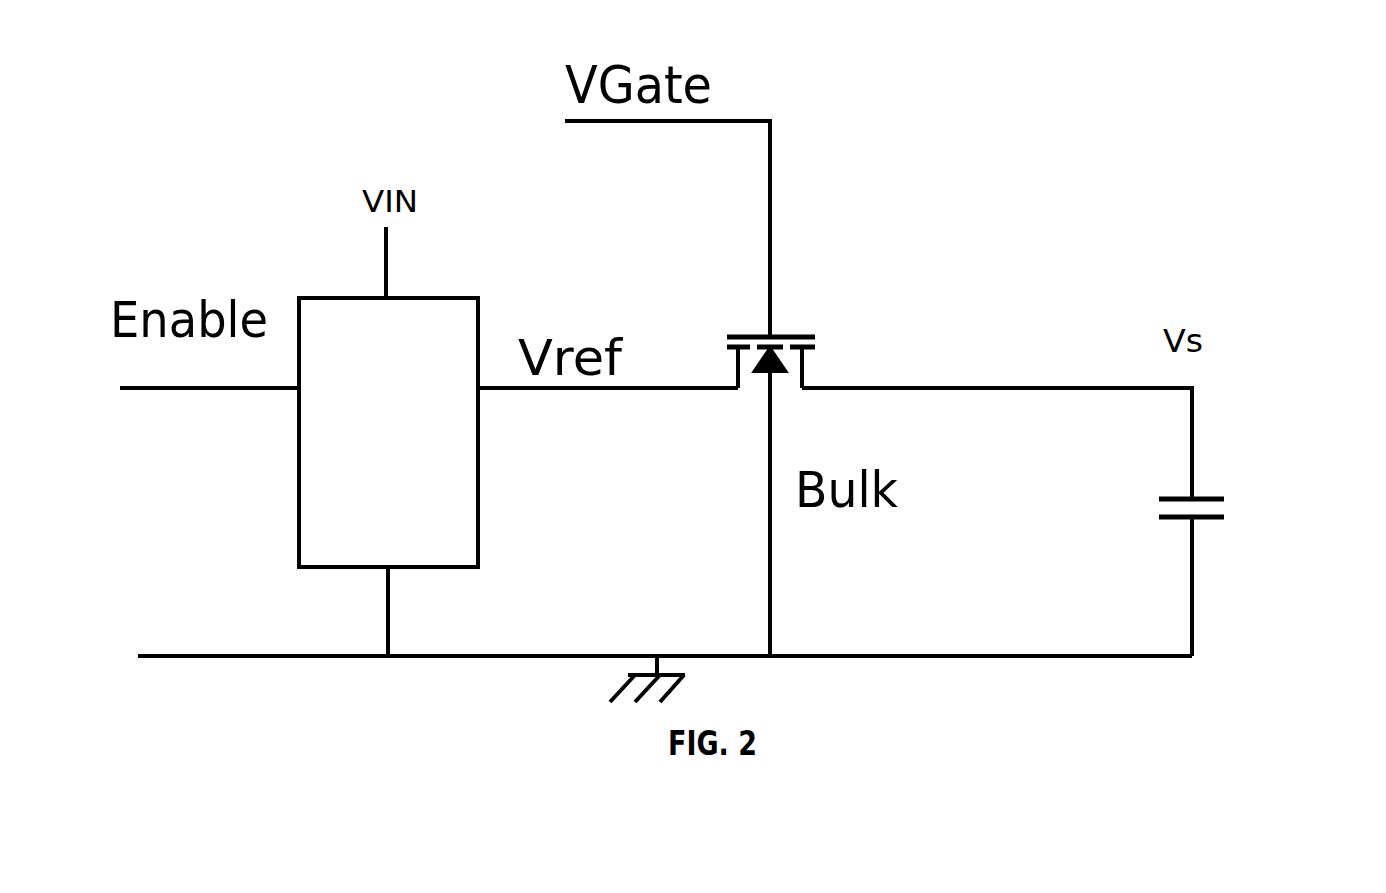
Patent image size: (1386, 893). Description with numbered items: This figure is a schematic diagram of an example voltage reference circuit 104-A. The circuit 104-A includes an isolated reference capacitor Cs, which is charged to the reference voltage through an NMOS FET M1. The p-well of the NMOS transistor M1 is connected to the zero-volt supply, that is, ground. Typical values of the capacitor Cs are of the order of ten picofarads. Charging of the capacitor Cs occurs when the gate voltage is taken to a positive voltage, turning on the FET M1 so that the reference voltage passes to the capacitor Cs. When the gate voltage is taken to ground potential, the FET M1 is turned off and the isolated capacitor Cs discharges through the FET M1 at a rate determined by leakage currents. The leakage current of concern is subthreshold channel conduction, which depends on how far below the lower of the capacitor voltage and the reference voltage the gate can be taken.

The voltage reference circuit 104-A is at (375, 152).
The NMOS FET M1 is at (832, 463).
The isolated reference capacitor Cs is at (1258, 521).